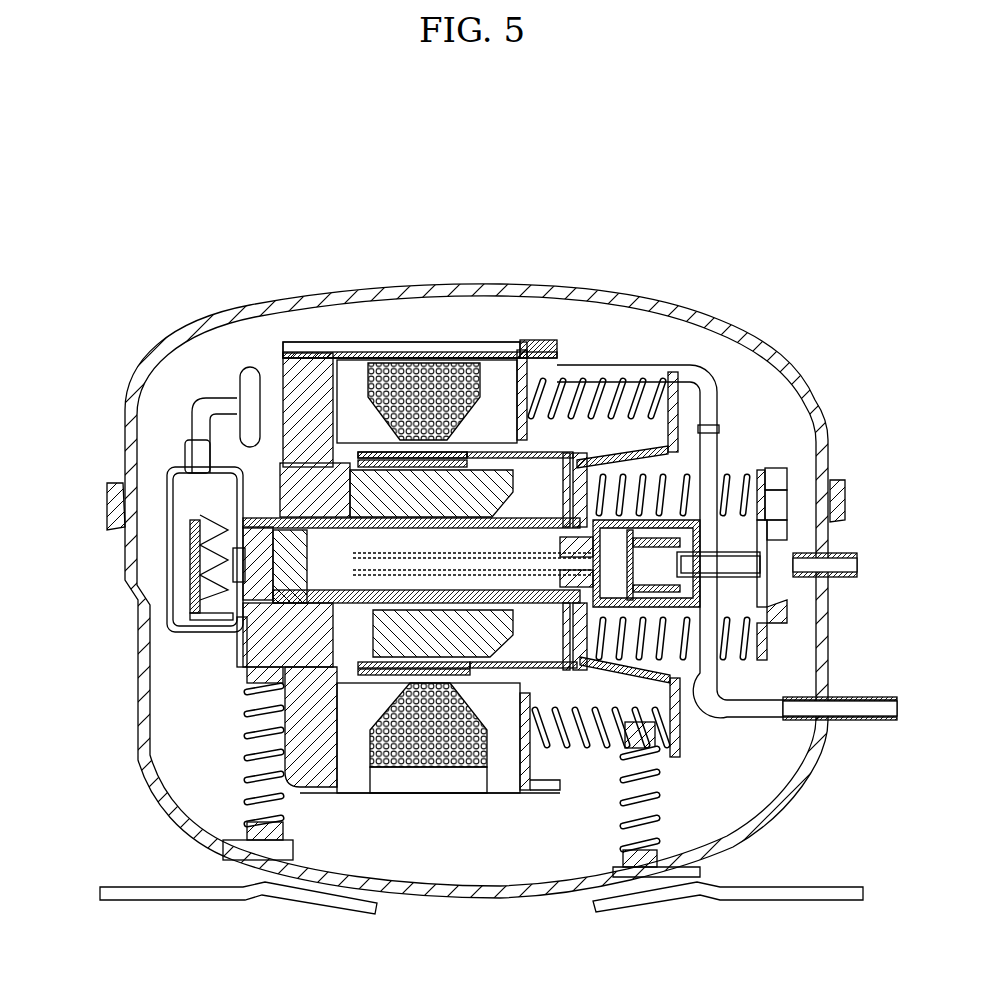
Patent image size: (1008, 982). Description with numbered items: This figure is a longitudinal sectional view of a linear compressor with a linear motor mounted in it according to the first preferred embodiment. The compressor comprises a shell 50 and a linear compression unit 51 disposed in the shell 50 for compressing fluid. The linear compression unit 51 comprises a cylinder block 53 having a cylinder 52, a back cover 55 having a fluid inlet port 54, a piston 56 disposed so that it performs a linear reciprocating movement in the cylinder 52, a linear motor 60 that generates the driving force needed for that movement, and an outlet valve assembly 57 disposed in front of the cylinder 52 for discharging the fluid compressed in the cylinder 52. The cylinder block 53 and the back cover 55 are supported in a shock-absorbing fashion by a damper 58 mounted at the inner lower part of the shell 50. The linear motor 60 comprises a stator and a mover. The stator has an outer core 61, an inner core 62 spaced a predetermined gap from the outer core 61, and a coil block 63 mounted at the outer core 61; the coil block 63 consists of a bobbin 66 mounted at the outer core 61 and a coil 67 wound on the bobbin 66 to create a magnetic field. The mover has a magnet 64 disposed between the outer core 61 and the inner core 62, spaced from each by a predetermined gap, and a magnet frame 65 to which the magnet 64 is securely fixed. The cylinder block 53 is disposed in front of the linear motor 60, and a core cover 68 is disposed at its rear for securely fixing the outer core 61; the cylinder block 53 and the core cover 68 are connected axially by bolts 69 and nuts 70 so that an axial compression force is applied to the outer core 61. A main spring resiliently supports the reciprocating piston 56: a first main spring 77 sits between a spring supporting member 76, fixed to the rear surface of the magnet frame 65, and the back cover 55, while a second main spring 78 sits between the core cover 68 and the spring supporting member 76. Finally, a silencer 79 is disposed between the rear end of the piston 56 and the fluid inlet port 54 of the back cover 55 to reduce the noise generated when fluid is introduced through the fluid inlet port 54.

The shell 50 is at (130, 387).
The linear compression unit 51 is at (210, 387).
The cylinder 52 is at (327, 523).
The cylinder block 53 is at (300, 363).
The fluid inlet port 54 is at (757, 563).
The back cover 55 is at (763, 482).
The piston 56 is at (240, 647).
The outlet valve assembly 57 is at (163, 560).
The damper 58 is at (233, 763).
The linear motor 60 is at (573, 222).
The outer core 61 is at (353, 328).
The inner core 62 is at (407, 367).
The coil block 63 is at (503, 204).
The magnet 64 is at (487, 445).
The magnet frame 65 is at (568, 455).
The bobbin 66 is at (430, 458).
The coil 67 is at (375, 452).
The core cover 68 is at (556, 365).
The bolts 69 is at (637, 380).
The nuts 70 is at (672, 372).
The spring supporting member 76 is at (695, 388).
The first main spring 77 is at (752, 470).
The second main spring 78 is at (770, 355).
The silencer 79 is at (700, 593).